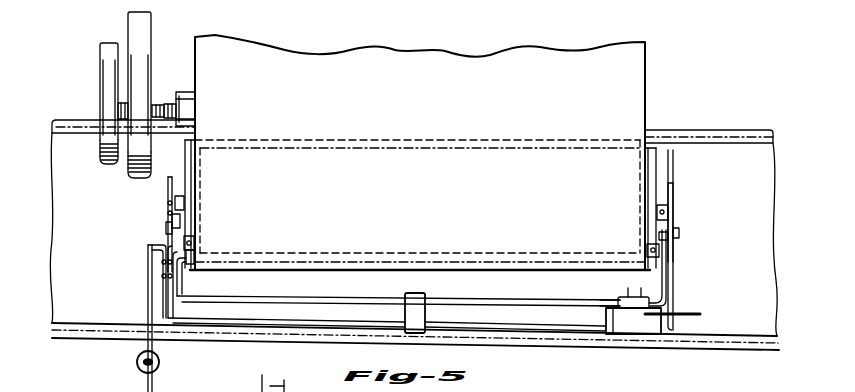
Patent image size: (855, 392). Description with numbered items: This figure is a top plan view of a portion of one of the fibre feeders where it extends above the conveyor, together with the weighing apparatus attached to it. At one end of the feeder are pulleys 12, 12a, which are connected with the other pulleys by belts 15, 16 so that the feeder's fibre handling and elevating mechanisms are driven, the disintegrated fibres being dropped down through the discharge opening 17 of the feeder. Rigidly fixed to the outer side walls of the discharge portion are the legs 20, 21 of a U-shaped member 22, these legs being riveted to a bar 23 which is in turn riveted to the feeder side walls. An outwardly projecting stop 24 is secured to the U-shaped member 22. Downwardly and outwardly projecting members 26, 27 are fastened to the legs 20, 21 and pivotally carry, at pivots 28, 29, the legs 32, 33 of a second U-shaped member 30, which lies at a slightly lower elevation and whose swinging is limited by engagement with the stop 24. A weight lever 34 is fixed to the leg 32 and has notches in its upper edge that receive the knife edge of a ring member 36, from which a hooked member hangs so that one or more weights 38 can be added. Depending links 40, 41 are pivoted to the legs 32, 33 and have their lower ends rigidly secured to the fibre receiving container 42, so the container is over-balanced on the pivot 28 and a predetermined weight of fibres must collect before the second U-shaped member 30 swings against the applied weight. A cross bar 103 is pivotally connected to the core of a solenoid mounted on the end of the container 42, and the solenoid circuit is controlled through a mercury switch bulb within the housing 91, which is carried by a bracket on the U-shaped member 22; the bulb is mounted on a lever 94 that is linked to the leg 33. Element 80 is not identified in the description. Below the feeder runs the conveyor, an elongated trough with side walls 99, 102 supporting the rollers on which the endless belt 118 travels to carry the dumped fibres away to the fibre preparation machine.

The pulley 12 is at (151, 78).
The pulley 12a is at (98, 147).
The belt 15 is at (106, 166).
The belt 16 is at (147, 40).
The discharge opening 17 is at (366, 155).
The leg 20 is at (190, 282).
The leg 21 is at (630, 292).
The U-shaped member 22 is at (350, 284).
The bar 23 is at (196, 243).
The stop 24 is at (427, 318).
The downwardly and outwardly projecting member 26 is at (171, 222).
The downwardly and outwardly projecting member 27 is at (672, 240).
The pivot 28 is at (166, 229).
The pivot 29 is at (681, 235).
The second U-shaped member 30 is at (296, 325).
The leg 32 is at (167, 191).
The leg 33 is at (672, 300).
The weight lever 34 is at (147, 300).
The ring member 36 is at (160, 362).
The weight 38 is at (137, 361).
The depending link 40 is at (185, 203).
The depending link 41 is at (657, 212).
The fibre receiving container 42 is at (192, 160).
The plate 80 is at (680, 200).
The mercury switch housing 91 is at (625, 330).
The lever 94 is at (690, 312).
The side wall 99 is at (96, 312).
The side wall 102 is at (723, 145).
The cross bar 103 is at (248, 383).
The endless belt 118 is at (752, 239).